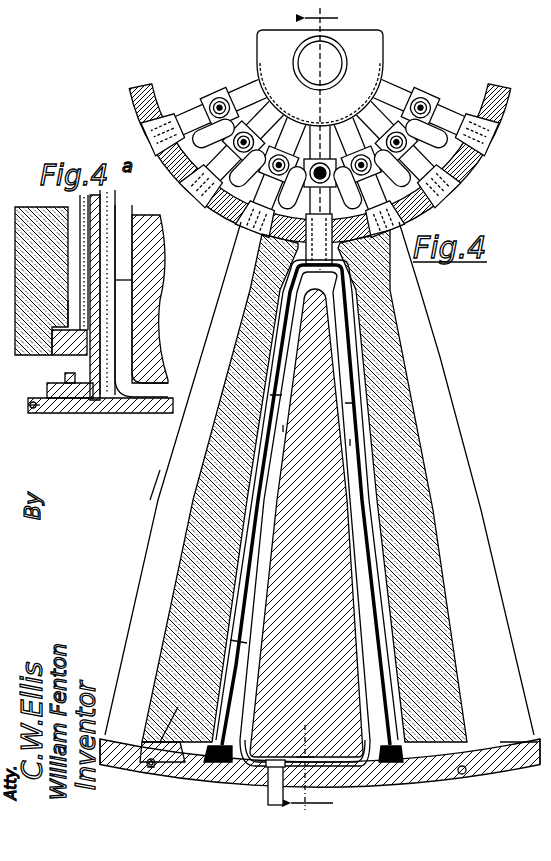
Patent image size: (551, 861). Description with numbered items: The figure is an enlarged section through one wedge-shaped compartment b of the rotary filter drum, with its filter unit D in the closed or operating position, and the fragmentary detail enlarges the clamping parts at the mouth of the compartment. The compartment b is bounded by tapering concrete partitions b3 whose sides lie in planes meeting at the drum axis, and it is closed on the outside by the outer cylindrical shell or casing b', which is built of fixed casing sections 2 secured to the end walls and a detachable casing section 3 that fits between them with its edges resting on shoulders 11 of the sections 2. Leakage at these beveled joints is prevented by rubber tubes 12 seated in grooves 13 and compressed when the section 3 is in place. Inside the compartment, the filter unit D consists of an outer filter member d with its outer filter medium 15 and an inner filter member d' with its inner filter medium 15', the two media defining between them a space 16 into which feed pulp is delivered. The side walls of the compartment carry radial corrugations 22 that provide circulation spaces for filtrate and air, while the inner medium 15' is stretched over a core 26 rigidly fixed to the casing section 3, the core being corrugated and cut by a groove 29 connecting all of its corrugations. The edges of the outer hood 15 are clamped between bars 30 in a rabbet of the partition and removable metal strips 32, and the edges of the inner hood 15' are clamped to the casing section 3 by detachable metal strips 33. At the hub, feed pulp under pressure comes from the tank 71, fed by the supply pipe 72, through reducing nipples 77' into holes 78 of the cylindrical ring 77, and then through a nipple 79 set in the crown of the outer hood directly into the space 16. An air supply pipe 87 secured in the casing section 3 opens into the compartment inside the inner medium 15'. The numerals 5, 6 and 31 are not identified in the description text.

In FIG. 4, the tank 71 is at (373, 53).
In FIG. 4, the feed pulp supply pipe 72 is at (320, 77).
In FIG. 4, the cylindrical ring 77 is at (326, 151).
In FIG. 4, the reducing nipple 77' is at (320, 134).
In FIG. 4, the holes 78 is at (143, 103).
In FIG. 4, the nipple 79 is at (372, 240).
In FIG. 4, the section line 5 is at (322, 410).
In FIG. 4, the space 16 is at (347, 270).
In FIG. 4A, the space 16 is at (100, 243).
In FIG. 4, the corrugations 22 is at (277, 335).
In FIG. 4, the core 26 is at (333, 553).
In FIG. 4A, the core 26 is at (163, 287).
In FIG. 4, the filter unit D is at (325, 363).
In FIG. 4, the outer filter member d is at (279, 394).
In FIG. 4A, the outer filter member d is at (79, 279).
In FIG. 4, the inner filter member d' is at (363, 434).
In FIG. 4A, the inner filter member d' is at (152, 301).
In FIG. 4, the compartment b is at (305, 486).
In FIG. 4A, the compartment b is at (48, 281).
In FIG. 4, the partition b3 is at (372, 303).
In FIG. 4, the outer cylindrical shell or casing b' is at (519, 771).
In FIG. 4, the outer filter medium 15 is at (182, 484).
In FIG. 4A, the outer filter medium 15 is at (48, 262).
In FIG. 4, the inner filter medium 15' is at (171, 630).
In FIG. 4A, the inner filter medium 15' is at (151, 297).
In FIG. 4, the pocket 6 is at (203, 668).
In FIG. 4, the bars 30 is at (178, 707).
In FIG. 4A, the bars 30 is at (78, 318).
In FIG. 4, the packing ring 31 is at (190, 740).
In FIG. 4, the groove 29 is at (295, 743).
In FIG. 4, the air supply pipe 87 is at (268, 786).
In FIG. 4, the casing section 3 is at (320, 778).
In FIG. 4A, the casing section 3 is at (90, 414).
In FIG. 4, the casing section 2 is at (180, 770).
In FIG. 4, the shoulders 11 is at (143, 760).
In FIG. 4, the rubber tube 12 is at (152, 772).
In FIG. 4A, the rubber tube 12 is at (33, 405).
In FIG. 4, the groove 13 is at (150, 768).
In FIG. 4A, the groove 13 is at (58, 422).
In FIG. 4A, the metal strip 32 is at (56, 342).
In FIG. 4A, the metal strip 33 is at (52, 388).